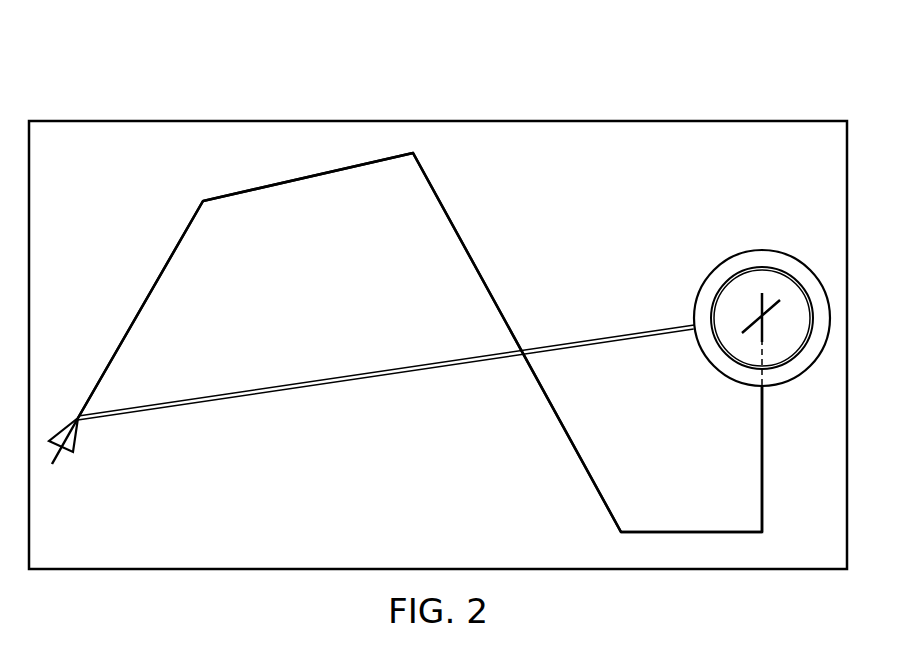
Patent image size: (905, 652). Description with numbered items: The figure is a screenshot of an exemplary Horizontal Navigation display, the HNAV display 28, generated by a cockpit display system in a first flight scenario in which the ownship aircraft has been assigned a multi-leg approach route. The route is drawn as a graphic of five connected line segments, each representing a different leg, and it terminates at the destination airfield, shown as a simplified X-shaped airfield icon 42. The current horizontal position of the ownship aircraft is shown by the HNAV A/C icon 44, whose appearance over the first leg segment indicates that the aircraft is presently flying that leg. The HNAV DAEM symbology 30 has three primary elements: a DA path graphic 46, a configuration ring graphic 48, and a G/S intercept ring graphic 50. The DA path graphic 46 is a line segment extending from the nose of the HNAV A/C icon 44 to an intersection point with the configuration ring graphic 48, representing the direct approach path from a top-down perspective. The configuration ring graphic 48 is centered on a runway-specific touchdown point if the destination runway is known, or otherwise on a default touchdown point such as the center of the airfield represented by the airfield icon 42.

The HNAV display 28 is at (120, 101).
The HNAV DAEM symbology 30 is at (656, 231).
The airfield icon 42 is at (743, 333).
The HNAV A/C icon 44 is at (78, 436).
The DA path graphic 46 is at (320, 383).
The configuration ring graphic 48 is at (752, 250).
The G/S intercept ring graphic 50 is at (789, 273).